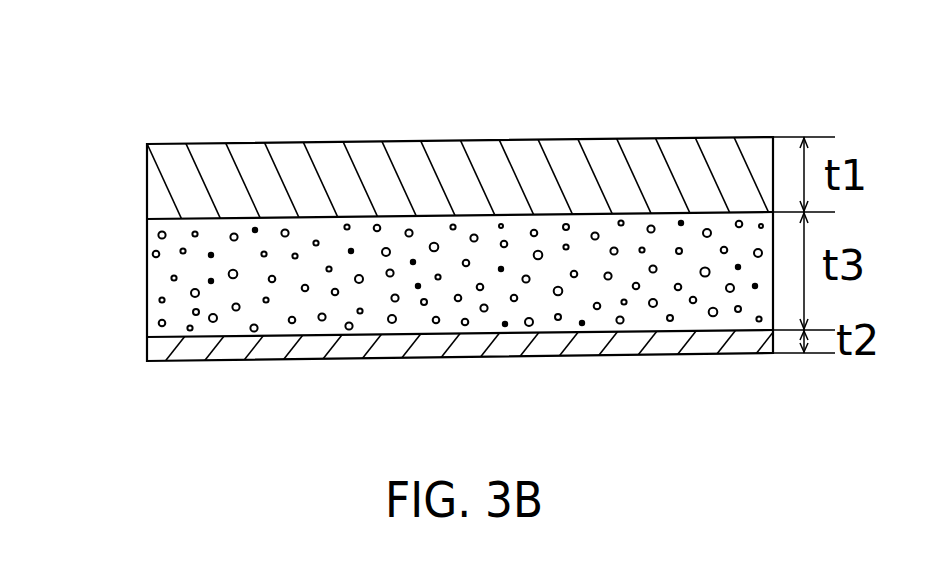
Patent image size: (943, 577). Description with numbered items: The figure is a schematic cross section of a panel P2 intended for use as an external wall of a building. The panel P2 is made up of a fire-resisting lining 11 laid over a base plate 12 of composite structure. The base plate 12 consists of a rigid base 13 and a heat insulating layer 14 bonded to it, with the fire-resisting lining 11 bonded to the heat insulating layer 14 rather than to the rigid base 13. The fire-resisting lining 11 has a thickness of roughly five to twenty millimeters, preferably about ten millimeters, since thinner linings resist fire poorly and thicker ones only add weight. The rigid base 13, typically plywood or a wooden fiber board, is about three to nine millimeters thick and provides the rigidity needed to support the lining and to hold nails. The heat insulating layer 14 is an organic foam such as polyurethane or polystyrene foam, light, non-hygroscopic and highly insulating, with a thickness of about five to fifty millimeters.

The panel P2 is at (678, 133).
The fire-resisting lining 11 is at (158, 178).
The base plate 12 is at (52, 243).
The rigid base 13 is at (148, 352).
The heat insulating layer 14 is at (160, 268).